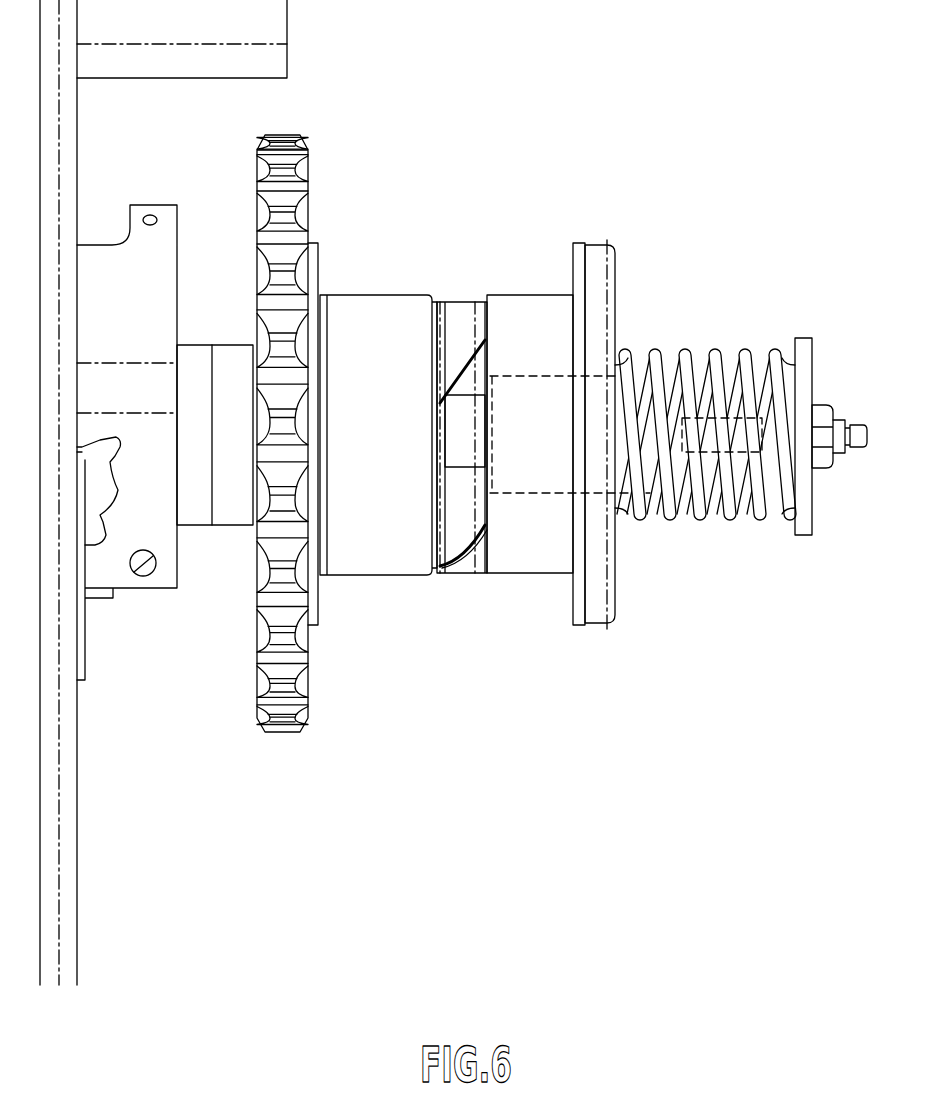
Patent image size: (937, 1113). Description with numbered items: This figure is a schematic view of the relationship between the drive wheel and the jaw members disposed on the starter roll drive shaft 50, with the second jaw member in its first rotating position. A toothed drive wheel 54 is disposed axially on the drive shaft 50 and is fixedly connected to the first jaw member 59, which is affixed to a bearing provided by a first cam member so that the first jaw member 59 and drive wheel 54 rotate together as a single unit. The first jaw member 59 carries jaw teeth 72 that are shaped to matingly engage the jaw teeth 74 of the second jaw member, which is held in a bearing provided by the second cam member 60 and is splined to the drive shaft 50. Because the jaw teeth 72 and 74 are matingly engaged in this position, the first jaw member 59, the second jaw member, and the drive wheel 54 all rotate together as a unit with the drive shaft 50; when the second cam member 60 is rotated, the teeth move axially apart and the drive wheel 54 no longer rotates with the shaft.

The starter roll drive shaft 50 is at (201, 352).
The toothed drive wheel 54 is at (294, 140).
The first jaw member 59 is at (379, 310).
The second cam member 60 is at (528, 300).
The jaw teeth 72 is at (456, 318).
The jaw teeth 74 is at (465, 562).